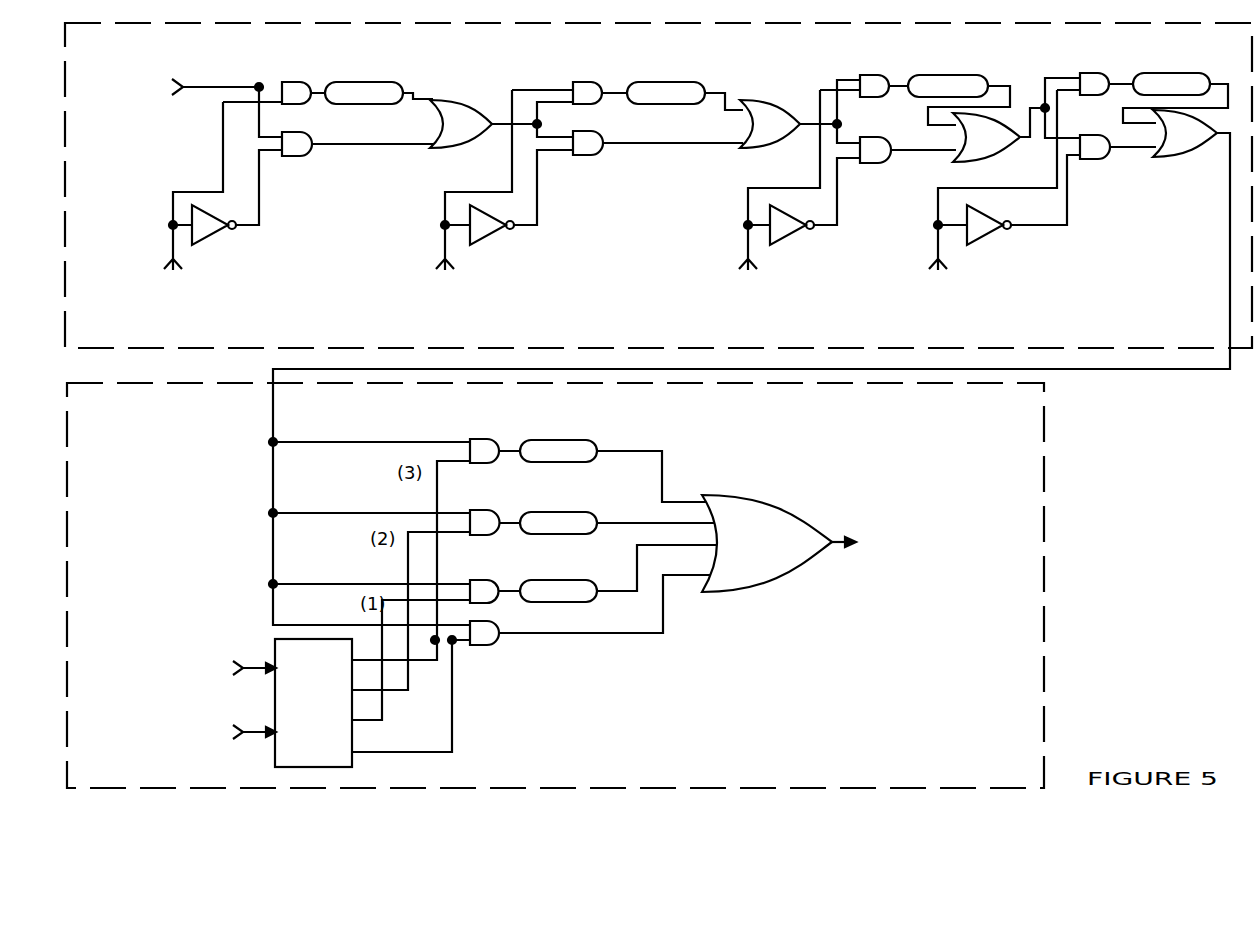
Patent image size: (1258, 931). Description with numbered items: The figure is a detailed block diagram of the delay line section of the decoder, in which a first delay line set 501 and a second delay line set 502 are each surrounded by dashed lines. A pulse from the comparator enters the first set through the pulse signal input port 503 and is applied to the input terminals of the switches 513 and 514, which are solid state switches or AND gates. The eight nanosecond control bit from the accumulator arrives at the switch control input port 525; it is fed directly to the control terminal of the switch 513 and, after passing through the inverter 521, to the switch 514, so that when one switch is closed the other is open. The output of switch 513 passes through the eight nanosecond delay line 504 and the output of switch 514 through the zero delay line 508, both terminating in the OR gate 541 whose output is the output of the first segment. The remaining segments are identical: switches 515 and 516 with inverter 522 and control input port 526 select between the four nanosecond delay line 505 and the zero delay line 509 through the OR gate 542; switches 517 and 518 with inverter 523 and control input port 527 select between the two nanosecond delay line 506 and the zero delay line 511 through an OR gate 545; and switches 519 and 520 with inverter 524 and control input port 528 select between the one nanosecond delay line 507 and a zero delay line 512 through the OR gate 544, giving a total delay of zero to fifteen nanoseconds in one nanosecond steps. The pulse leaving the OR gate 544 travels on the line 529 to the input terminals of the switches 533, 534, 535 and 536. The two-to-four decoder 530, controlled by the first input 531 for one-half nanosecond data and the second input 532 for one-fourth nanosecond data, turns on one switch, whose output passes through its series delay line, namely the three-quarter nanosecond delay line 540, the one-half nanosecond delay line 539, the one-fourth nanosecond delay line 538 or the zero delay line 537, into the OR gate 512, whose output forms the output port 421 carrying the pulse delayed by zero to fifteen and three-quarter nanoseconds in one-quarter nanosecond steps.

The first delay line set 501 is at (1073, 348).
The second delay line set 502 is at (1044, 477).
The pulse signal input port 503 is at (173, 89).
The eight nanosecond delay line 504 is at (338, 82).
The four nanosecond delay line 505 is at (645, 82).
The two nanosecond delay line 506 is at (922, 75).
The one nanosecond delay line 507 is at (1125, 73).
The zero delay line 508 is at (376, 145).
The zero delay line 509 is at (678, 144).
The zero delay line 511 is at (908, 151).
The OR gate 512 is at (1128, 148).
The switch 513 is at (312, 81).
The switch 514 is at (298, 157).
The switch 515 is at (598, 81).
The switch 516 is at (598, 156).
The switch 517 is at (881, 74).
The switch 518 is at (891, 116).
The switch 519 is at (1105, 72).
The switch 520 is at (1102, 116).
The inverter 521 is at (213, 236).
The inverter 522 is at (490, 235).
The inverter 523 is at (790, 235).
The inverter 524 is at (988, 235).
The switch control input port 525 is at (174, 272).
The switch control input port 526 is at (446, 270).
The switch control input port 527 is at (749, 270).
The switch control input port 528 is at (939, 270).
The line 529 is at (271, 370).
The 2/4 decoder 530 is at (352, 759).
The first input 531 is at (232, 667).
The second input 532 is at (232, 731).
The switch 533 is at (481, 438).
The switch 534 is at (497, 510).
The switch 535 is at (493, 580).
The switch 536 is at (482, 646).
The zero delay line 537 is at (552, 634).
The one-fourth nanosecond delay line 538 is at (538, 561).
The one-half nanosecond delay line 539 is at (538, 487).
The three-quarter nanosecond delay line 540 is at (538, 413).
The OR gate 541 is at (455, 149).
The OR gate 542 is at (791, 149).
The OR gate 544 is at (1200, 158).
The OR gate 545 is at (978, 163).
The output port 421 is at (848, 548).